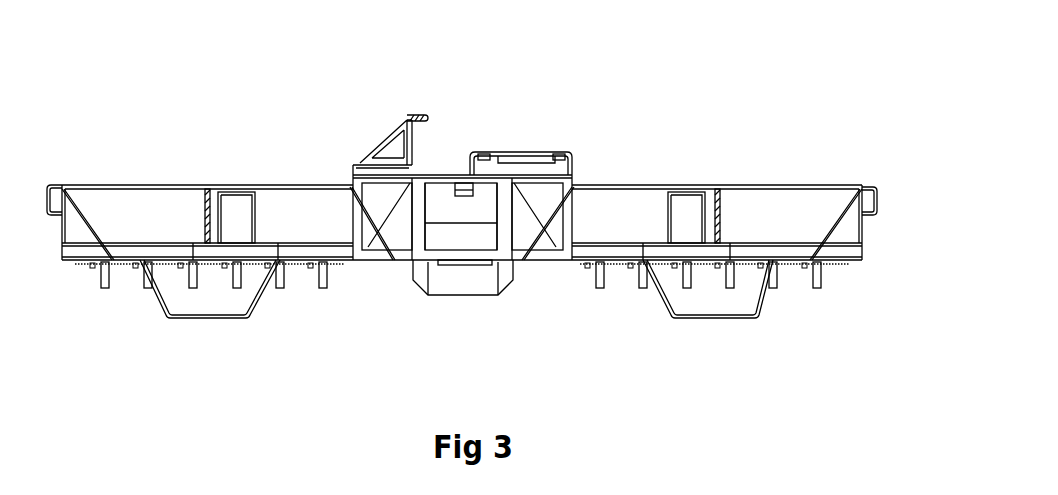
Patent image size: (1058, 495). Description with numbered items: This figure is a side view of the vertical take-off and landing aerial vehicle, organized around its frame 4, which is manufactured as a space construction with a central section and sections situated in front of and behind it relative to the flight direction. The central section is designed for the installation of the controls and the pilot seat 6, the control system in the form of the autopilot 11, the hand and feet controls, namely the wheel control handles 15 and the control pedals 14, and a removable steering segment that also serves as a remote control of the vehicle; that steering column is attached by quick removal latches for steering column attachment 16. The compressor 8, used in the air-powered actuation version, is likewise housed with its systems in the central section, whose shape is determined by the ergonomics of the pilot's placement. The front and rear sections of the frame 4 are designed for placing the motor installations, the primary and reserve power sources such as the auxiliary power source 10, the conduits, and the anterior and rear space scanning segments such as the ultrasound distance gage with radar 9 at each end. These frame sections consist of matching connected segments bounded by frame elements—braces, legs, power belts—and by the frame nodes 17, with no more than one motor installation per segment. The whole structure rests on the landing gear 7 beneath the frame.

The frame 4 is at (665, 180).
The pilot seat 6 is at (513, 148).
The landing gear 7 is at (758, 317).
The compressor 8 is at (488, 302).
The ultrasound distance gage with radar 9 is at (63, 185).
The auxiliary power source 10 is at (238, 210).
The autopilot 11 is at (470, 182).
The control pedals 14 is at (552, 258).
The wheel control handles 15 is at (432, 108).
The quick removal latches for steering column attachment 16 is at (408, 143).
The frame nodes 17 is at (205, 183).